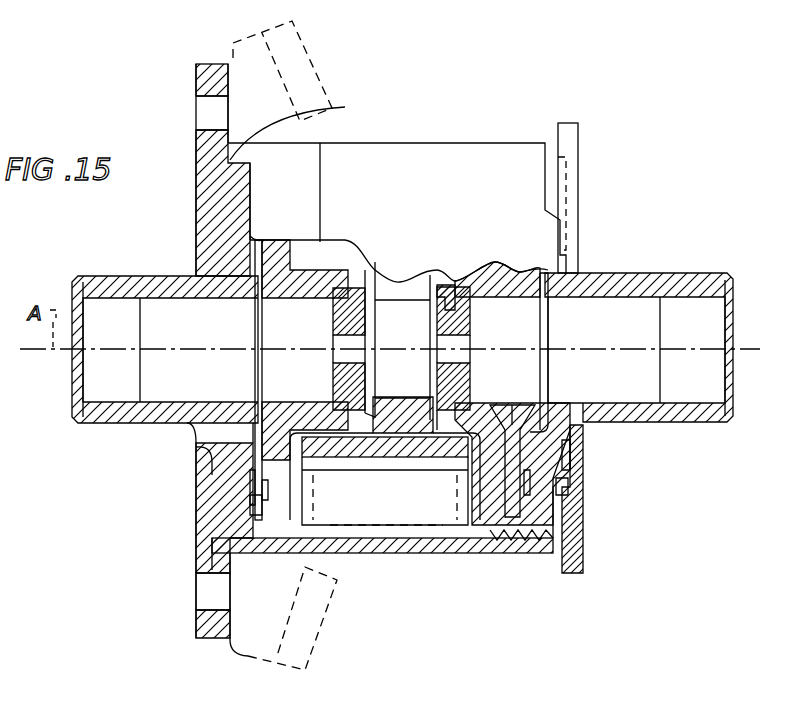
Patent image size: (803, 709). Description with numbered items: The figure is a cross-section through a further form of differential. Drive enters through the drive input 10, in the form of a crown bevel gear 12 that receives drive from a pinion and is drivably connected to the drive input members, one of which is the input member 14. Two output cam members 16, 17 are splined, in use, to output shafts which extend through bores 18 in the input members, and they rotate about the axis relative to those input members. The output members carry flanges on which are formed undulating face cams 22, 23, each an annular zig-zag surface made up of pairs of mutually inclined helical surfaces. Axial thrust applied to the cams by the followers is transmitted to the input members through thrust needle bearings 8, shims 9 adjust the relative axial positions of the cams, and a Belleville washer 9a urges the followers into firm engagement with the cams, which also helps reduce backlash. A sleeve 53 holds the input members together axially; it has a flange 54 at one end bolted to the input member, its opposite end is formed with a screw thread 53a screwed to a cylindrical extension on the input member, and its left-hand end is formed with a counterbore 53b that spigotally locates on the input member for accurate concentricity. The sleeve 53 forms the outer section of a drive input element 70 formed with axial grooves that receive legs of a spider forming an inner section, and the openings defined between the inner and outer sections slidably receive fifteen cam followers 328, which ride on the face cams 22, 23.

The drive input 10 is at (228, 38).
The crown bevel gear 12 is at (316, 80).
The counterbore 53b is at (311, 129).
The output cam member 16 is at (290, 237).
The bore 18 is at (118, 310).
The shim 9 is at (233, 410).
The output cam member 17 is at (547, 420).
The drive input element 70 is at (215, 450).
The thrust needle bearing 8 is at (253, 503).
The undulating face cam 22 is at (285, 525).
The cam follower 328 is at (404, 513).
The sleeve 53 is at (432, 552).
The undulating face cam 23 is at (487, 500).
The screw thread 53a is at (525, 545).
The Belleville washer 9a is at (572, 467).
The drive input member 14 is at (537, 515).
The flange 54 is at (222, 622).